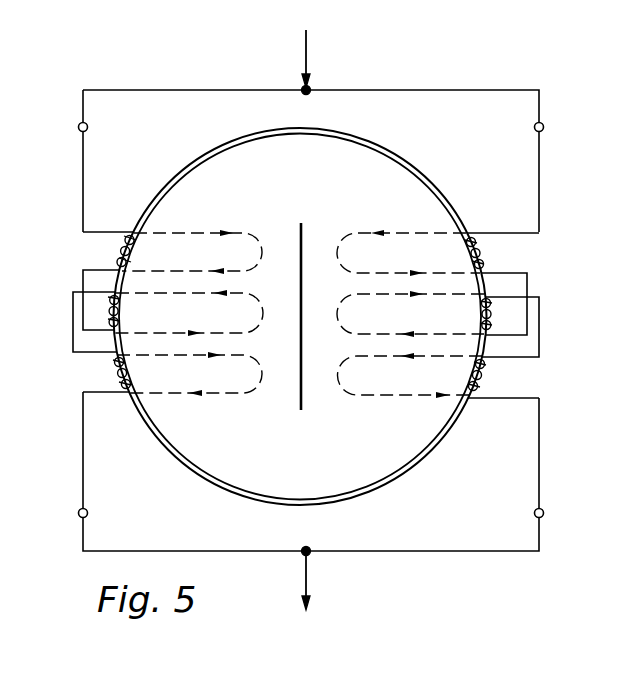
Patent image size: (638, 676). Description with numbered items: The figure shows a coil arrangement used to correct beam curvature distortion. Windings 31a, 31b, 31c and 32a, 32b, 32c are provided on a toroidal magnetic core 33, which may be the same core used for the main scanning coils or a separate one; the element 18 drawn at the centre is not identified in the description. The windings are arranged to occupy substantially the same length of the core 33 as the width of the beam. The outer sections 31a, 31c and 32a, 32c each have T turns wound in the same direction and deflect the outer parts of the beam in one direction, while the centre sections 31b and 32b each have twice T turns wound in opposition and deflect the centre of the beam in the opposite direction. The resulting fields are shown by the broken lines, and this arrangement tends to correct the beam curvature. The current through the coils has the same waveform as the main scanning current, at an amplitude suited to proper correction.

The bar / armature 18 is at (304, 228).
The toroidal magnetic core 33 is at (436, 186).
The outer winding section 31a is at (127, 240).
The centre winding section 31b is at (112, 305).
The outer winding section 31c is at (122, 366).
The outer winding section 32a is at (470, 250).
The centre winding section 32b is at (490, 313).
The outer winding section 32c is at (474, 380).